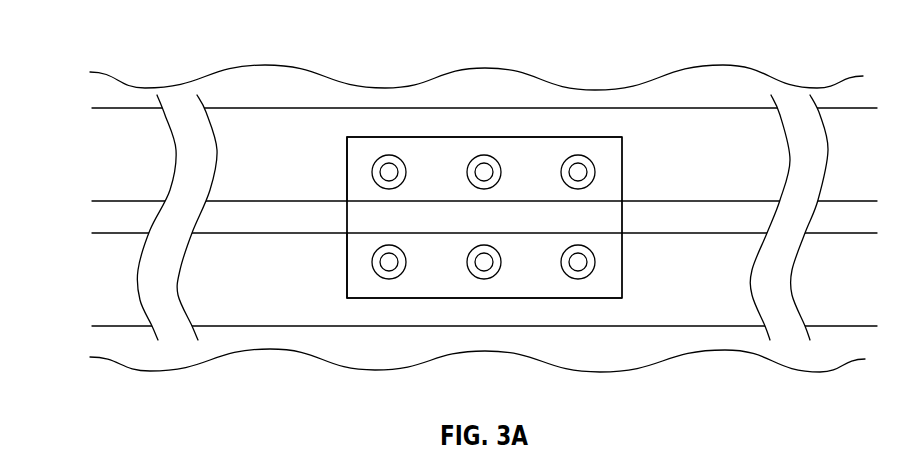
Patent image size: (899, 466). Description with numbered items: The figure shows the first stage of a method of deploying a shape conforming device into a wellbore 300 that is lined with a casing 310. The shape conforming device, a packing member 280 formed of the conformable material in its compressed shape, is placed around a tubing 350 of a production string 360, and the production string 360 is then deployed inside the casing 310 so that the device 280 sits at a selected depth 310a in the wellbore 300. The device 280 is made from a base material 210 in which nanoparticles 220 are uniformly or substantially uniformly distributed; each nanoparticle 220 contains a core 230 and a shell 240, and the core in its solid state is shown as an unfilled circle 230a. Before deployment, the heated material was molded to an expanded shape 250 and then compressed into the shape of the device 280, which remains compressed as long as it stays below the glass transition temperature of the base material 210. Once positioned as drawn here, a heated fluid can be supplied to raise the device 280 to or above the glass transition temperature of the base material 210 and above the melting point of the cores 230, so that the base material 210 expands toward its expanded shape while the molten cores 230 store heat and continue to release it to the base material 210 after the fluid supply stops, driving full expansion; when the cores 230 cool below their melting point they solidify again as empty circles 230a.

The wellbore 300 is at (265, 63).
The casing 310 is at (312, 108).
The selected depth 310a is at (345, 243).
The base material 210 is at (427, 147).
The packing member 280 is at (546, 132).
The expanded shape 250 is at (346, 163).
The nanoparticles 220 is at (596, 172).
The shell 240 is at (467, 263).
The core 230 is at (484, 262).
The solid core 230a is at (578, 262).
The tubing 350 is at (230, 234).
The production string 360 is at (130, 201).